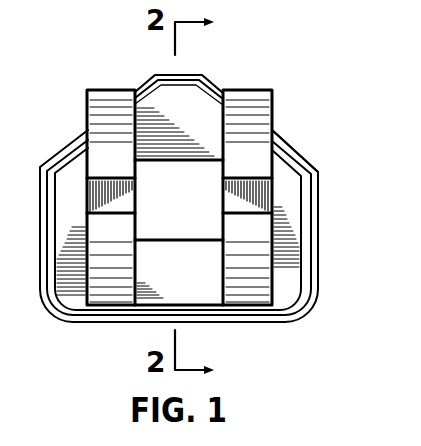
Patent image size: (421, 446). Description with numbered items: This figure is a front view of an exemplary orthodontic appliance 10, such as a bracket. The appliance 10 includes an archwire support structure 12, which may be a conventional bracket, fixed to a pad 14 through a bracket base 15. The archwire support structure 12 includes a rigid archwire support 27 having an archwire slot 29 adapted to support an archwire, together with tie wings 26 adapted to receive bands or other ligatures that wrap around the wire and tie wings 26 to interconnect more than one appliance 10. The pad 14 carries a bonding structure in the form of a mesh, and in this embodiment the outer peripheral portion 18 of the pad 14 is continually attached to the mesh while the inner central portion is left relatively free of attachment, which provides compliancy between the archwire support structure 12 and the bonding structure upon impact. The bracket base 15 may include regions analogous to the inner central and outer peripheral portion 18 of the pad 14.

The orthodontic appliance 10 is at (294, 34).
The archwire support structure 12 is at (278, 87).
The pad 14 is at (238, 328).
The bracket base 15 is at (168, 242).
The outer peripheral portion 18 is at (187, 78).
The tie wings 26 is at (88, 133).
The rigid archwire support 27 is at (276, 141).
The archwire slot 29 is at (273, 198).